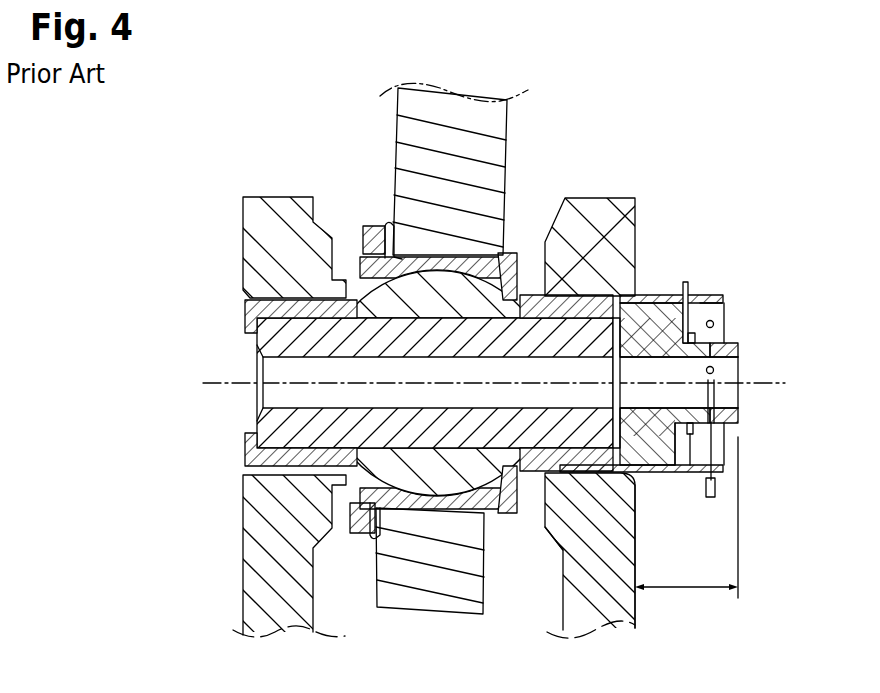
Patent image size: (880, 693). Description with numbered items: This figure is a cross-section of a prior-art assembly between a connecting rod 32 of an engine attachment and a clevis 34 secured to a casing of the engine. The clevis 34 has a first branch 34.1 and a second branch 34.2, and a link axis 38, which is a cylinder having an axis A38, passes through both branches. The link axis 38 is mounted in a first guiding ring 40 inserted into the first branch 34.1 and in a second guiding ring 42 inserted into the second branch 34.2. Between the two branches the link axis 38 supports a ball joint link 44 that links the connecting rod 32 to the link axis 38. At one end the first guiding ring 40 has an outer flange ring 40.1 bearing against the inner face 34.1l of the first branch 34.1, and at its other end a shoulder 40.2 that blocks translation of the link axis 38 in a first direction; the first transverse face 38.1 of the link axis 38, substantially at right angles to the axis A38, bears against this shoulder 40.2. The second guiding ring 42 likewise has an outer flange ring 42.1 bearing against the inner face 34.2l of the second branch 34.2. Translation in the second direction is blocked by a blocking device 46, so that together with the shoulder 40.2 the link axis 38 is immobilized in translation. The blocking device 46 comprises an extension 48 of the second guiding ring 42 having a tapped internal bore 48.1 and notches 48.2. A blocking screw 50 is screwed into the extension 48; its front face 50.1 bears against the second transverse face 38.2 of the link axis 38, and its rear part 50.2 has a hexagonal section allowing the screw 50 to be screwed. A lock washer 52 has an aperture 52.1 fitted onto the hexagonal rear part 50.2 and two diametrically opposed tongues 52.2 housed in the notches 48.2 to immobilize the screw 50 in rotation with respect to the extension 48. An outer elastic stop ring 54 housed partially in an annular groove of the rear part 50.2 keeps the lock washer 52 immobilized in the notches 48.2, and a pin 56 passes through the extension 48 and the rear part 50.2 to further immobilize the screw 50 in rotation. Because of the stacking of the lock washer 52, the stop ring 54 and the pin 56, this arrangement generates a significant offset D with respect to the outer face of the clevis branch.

The connecting rod 32 is at (512, 150).
The clevis 34 is at (652, 605).
The first branch 34.1 is at (285, 577).
The second branch 34.2 is at (600, 573).
The inner face 34.1l is at (320, 597).
The inner face 34.2l is at (563, 607).
The link axis 38 is at (443, 443).
The first transverse face 38.1 is at (253, 428).
The second transverse face 38.2 is at (652, 312).
The first guiding ring 40 is at (262, 311).
The outer flange ring 40.1 is at (335, 282).
The shoulder 40.2 is at (248, 338).
The second guiding ring 42 is at (583, 288).
The outer flange ring 42.1 is at (538, 292).
The ball joint link 44 is at (430, 522).
The blocking device 46 is at (760, 398).
The extension 48 is at (650, 478).
The tapped internal bore 48.1 is at (690, 358).
The notches 48.2 is at (708, 299).
The blocking screw 50 is at (666, 416).
The front face 50.1 is at (548, 478).
The rear part 50.2 is at (730, 428).
The lock washer 52 is at (688, 266).
The aperture 52.1 is at (682, 356).
The tongues 52.2 is at (712, 296).
The outer elastic stop ring 54 is at (696, 450).
The pin 56 is at (722, 497).
The axis A38 is at (223, 386).
The offset D is at (686, 517).